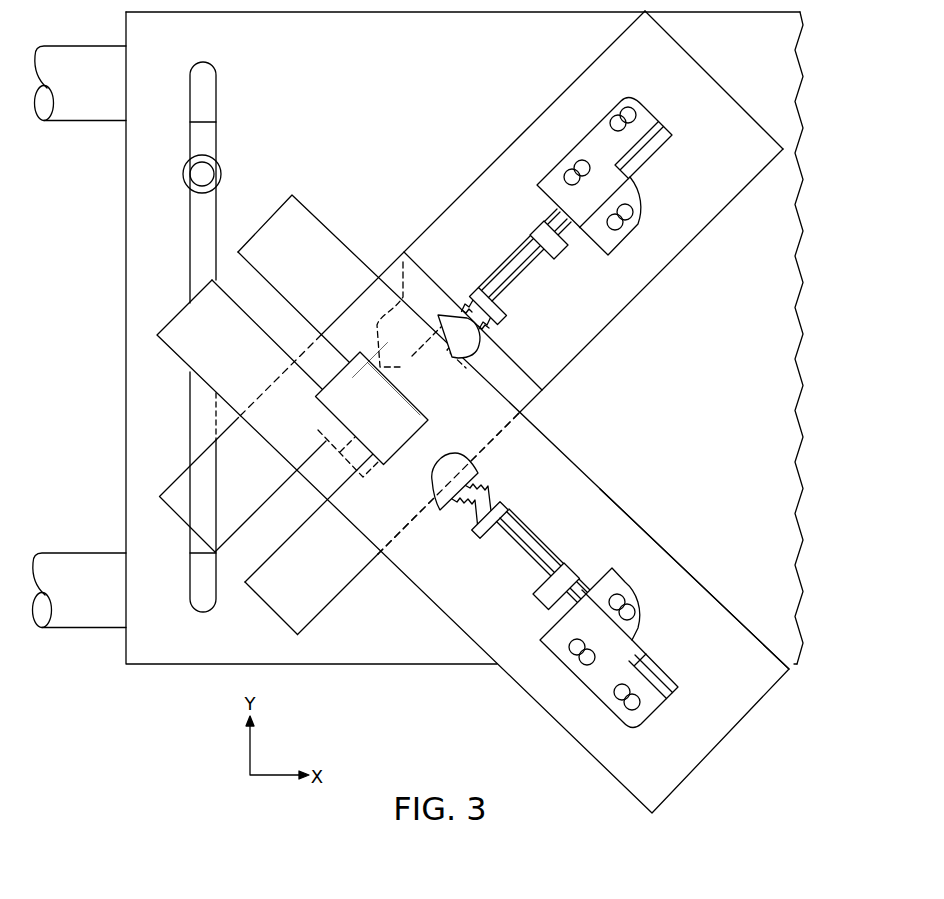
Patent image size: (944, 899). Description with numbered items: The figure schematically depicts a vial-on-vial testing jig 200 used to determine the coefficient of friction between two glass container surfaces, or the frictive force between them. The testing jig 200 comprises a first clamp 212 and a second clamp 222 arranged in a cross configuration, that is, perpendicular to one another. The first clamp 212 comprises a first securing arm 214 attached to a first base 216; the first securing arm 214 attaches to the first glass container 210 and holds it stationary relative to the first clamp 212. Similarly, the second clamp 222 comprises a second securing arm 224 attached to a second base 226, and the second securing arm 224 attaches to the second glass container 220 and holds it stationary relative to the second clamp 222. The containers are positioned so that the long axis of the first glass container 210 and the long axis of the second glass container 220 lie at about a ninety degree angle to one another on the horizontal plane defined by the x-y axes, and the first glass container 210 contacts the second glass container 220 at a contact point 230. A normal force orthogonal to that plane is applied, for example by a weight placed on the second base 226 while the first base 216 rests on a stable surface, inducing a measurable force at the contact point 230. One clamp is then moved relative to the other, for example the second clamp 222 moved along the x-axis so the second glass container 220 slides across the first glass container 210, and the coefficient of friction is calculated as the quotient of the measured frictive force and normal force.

The vial-on-vial testing jig 200 is at (752, 348).
The first glass container 210 is at (403, 262).
The first clamp 212 is at (478, 141).
The first securing arm 214 is at (653, 112).
The first base 216 is at (681, 257).
The second glass container 220 is at (330, 403).
The second clamp 222 is at (648, 484).
The second securing arm 224 is at (642, 598).
The second base 226 is at (727, 607).
The contact point 230 is at (392, 432).